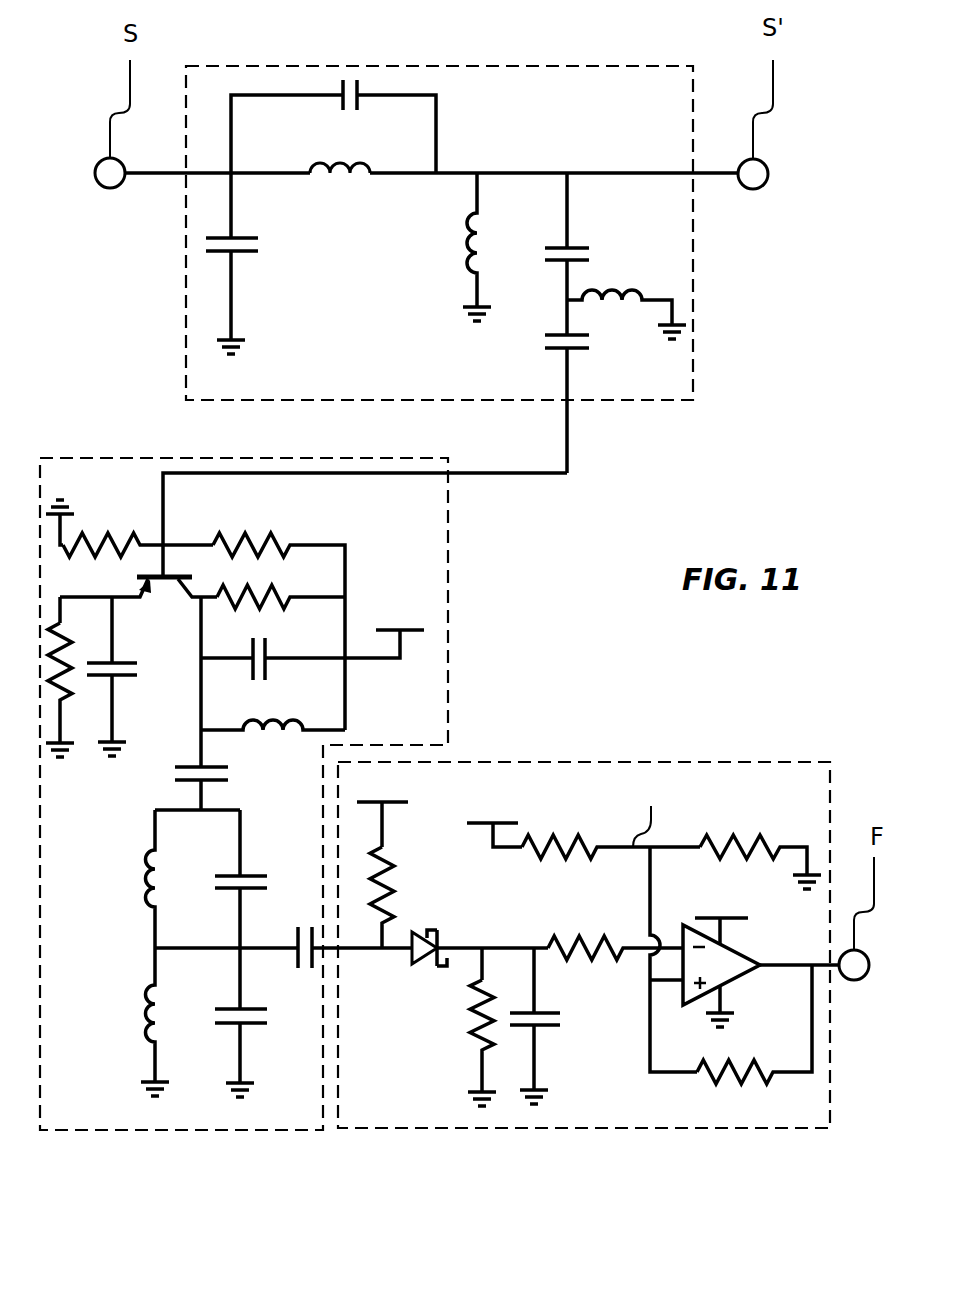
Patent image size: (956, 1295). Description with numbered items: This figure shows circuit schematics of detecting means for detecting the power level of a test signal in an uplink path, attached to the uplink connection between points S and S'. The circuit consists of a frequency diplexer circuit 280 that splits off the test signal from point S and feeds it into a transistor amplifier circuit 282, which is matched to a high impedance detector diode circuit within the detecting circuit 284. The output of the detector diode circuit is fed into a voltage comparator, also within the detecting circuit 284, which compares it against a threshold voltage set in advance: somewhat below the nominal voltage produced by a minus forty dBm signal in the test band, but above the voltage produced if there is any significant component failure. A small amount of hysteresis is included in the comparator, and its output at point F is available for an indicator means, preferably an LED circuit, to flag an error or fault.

The frequency diplexer circuit 280 is at (652, 408).
The transistor amplifier circuit 282 is at (462, 554).
The detecting circuit 284 is at (651, 748).